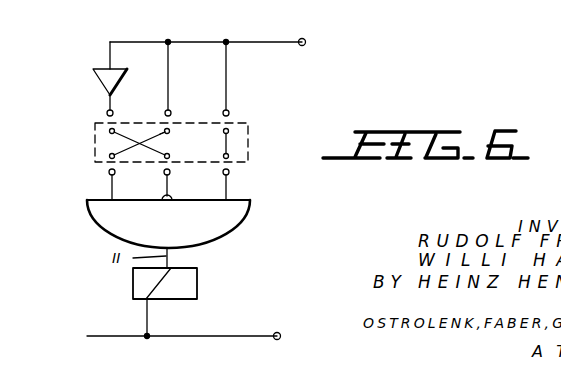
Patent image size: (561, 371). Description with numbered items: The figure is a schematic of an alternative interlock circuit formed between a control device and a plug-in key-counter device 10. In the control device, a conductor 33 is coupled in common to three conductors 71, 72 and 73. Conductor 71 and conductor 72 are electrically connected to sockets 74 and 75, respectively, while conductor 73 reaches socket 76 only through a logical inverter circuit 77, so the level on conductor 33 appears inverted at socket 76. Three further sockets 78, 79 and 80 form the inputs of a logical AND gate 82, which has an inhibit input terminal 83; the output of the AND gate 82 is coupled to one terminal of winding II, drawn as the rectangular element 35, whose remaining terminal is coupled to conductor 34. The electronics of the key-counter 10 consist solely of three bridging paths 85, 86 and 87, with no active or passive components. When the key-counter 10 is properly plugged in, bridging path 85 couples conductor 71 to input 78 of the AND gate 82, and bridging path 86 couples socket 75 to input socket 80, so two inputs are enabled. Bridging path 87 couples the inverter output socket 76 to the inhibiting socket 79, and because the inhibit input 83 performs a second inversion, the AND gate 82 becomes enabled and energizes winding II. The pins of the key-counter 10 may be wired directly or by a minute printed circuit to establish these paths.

The conductor 33 is at (290, 42).
The conductor 73 is at (106, 48).
The logical inverter circuit 77 is at (100, 86).
The socket 76 is at (118, 108).
The conductor 72 is at (170, 73).
The socket 75 is at (171, 112).
The conductor 71 is at (228, 86).
The socket 74 is at (229, 112).
The key-counter device 10 is at (95, 143).
The bridging path 86 is at (128, 136).
The bridging path 87 is at (168, 149).
The bridging path 85 is at (240, 144).
The input socket 80 is at (110, 175).
The inhibiting socket 79 is at (165, 175).
The inhibit input terminal 83 is at (173, 198).
The input socket 78 is at (229, 173).
The logical AND gate 82 is at (102, 222).
The resistor 35 is at (197, 283).
The conductor 34 is at (200, 336).